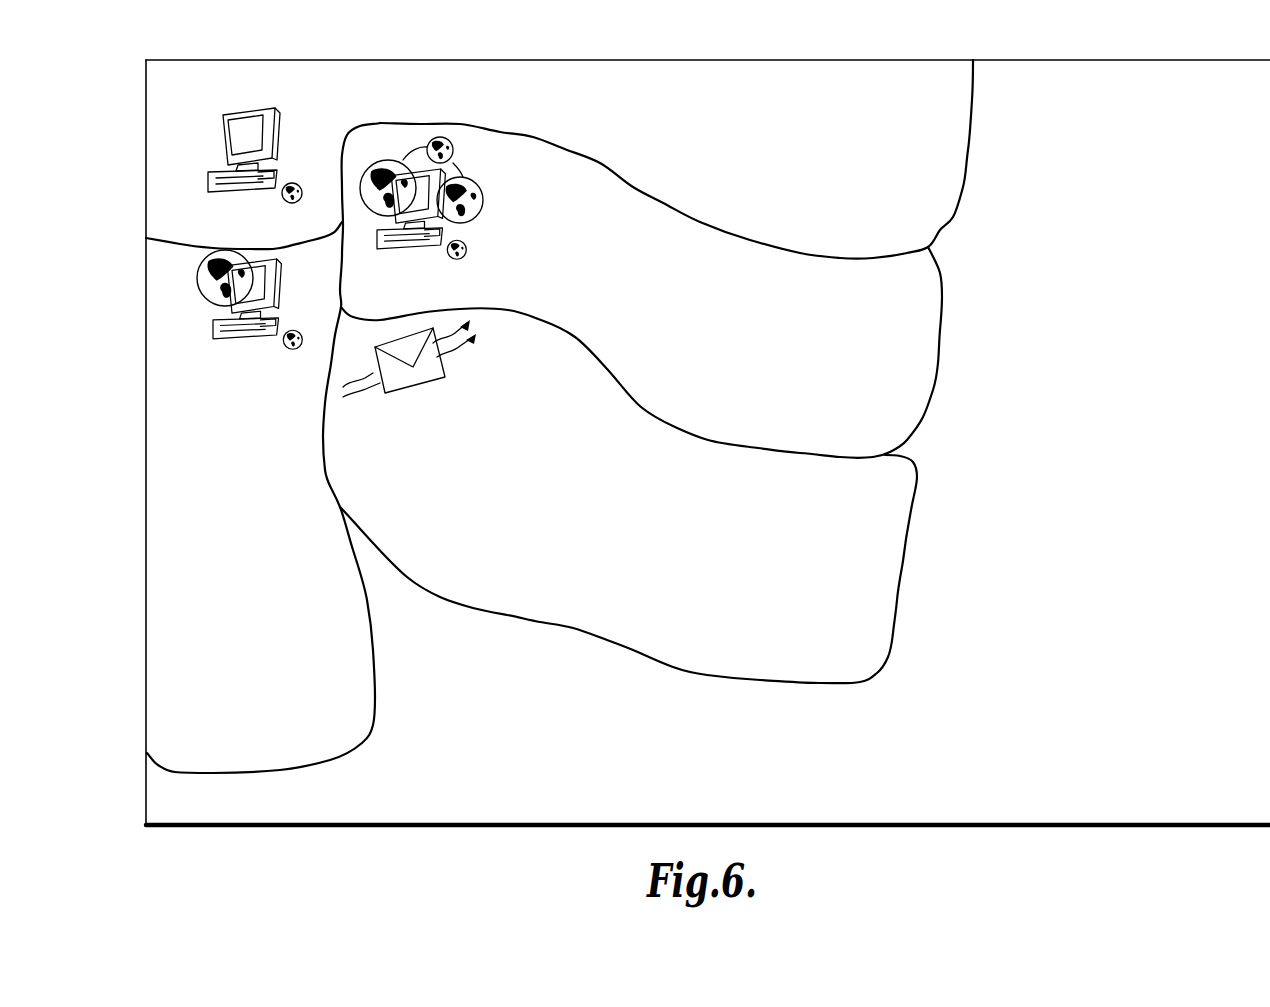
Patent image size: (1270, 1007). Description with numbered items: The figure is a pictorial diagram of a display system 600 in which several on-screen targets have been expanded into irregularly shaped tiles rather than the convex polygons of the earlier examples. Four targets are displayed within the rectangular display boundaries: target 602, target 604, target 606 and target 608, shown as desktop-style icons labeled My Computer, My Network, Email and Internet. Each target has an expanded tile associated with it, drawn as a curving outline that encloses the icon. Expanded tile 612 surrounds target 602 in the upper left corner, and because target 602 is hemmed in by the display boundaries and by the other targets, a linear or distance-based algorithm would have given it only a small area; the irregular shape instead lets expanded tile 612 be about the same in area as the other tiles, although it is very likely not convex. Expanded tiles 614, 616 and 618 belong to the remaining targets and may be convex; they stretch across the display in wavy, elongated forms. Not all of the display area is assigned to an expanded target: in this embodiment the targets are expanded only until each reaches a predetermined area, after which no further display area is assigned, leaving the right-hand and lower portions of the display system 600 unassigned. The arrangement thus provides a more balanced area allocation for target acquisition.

The display system 600 is at (1027, 60).
The target 602 is at (220, 147).
The target 604 is at (213, 313).
The target 606 is at (417, 443).
The target 608 is at (400, 133).
The expanded tile 612 is at (181, 96).
The expanded tile 614 is at (182, 440).
The expanded tile 616 is at (491, 497).
The expanded tile 618 is at (485, 164).